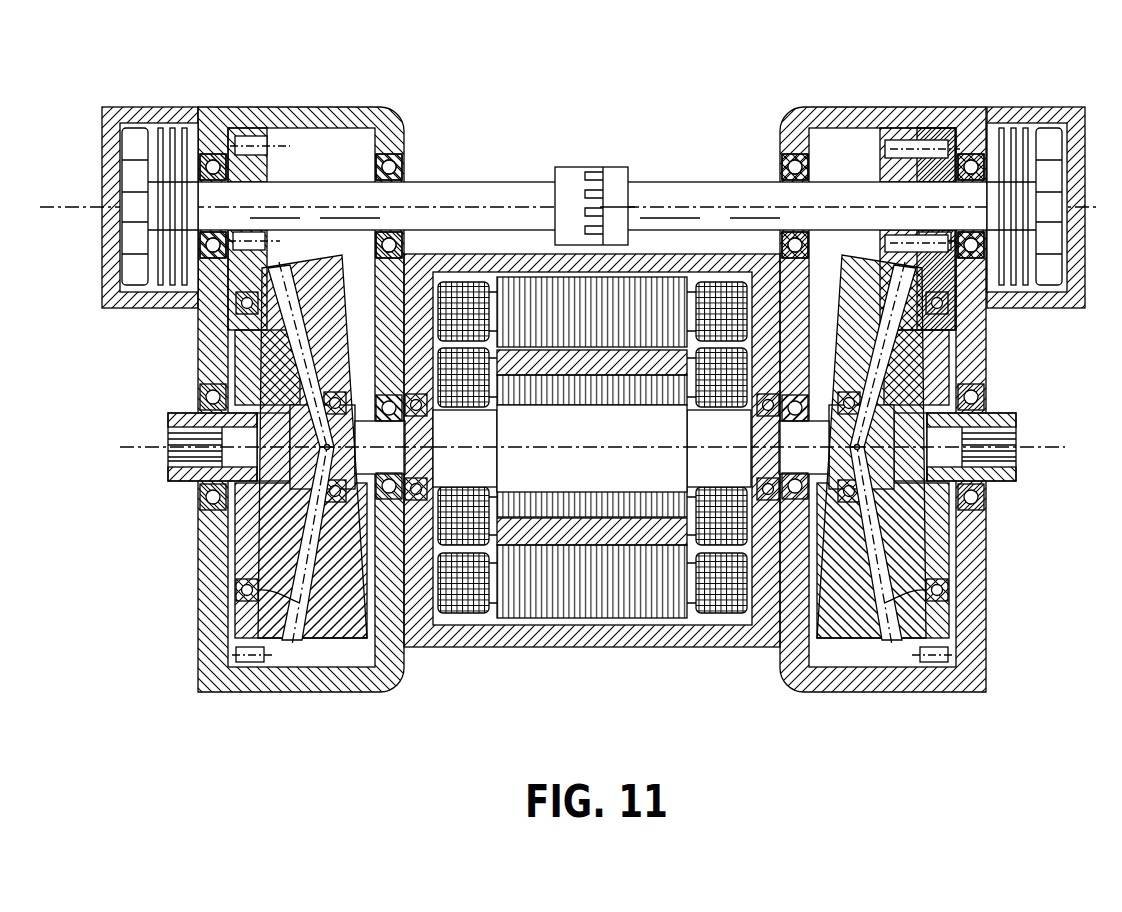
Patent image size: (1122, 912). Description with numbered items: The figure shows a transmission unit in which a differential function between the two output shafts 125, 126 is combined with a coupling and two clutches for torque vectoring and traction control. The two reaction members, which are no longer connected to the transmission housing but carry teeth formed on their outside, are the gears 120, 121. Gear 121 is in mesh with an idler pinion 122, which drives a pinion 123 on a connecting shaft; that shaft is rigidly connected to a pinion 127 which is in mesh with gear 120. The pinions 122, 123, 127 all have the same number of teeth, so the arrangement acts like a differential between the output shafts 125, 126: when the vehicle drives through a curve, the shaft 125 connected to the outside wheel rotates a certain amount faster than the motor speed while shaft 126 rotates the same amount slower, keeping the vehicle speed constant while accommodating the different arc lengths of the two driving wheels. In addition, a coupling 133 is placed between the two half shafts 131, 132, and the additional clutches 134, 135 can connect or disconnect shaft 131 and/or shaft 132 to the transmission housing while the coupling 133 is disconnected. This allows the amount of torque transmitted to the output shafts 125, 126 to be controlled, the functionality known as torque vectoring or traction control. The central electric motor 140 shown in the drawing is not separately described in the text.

The gear 120 is at (245, 630).
The gear 121 is at (945, 630).
The idler pinion 122 is at (922, 142).
The pinion 123 is at (885, 160).
The output shaft 125 is at (170, 495).
The output shaft 126 is at (1013, 495).
The pinion 127 is at (252, 150).
The half shaft 131 is at (470, 195).
The half shaft 132 is at (680, 195).
The coupling 133 is at (565, 185).
The clutch 134 is at (153, 108).
The clutch 135 is at (1062, 106).
The electric motor 140 is at (592, 605).